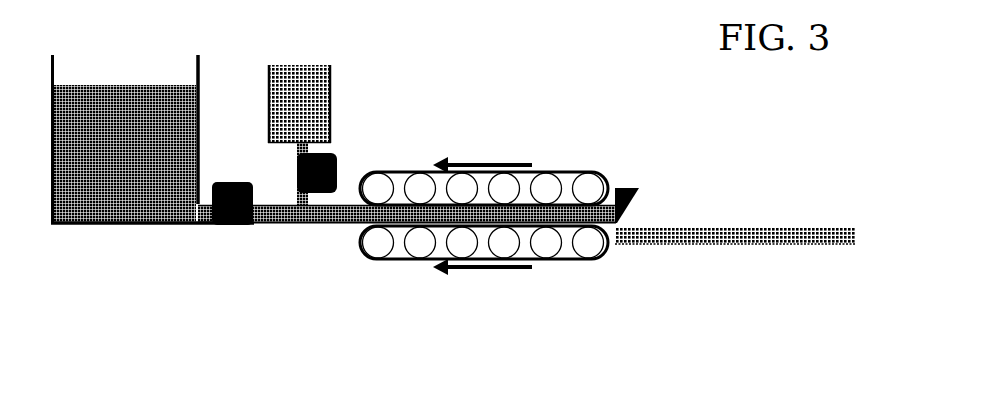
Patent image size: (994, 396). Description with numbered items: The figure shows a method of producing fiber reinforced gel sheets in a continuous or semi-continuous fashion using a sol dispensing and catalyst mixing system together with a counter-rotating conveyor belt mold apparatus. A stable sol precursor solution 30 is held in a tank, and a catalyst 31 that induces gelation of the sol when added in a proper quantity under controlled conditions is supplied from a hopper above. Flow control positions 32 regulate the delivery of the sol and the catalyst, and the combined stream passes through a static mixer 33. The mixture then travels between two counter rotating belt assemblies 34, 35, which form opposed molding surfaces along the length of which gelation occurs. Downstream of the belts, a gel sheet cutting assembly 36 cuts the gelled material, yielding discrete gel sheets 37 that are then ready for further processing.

The stable sol precursor solution 30 is at (128, 95).
The catalyst 31 is at (283, 65).
The flow control positions 32 is at (288, 179).
The static mixer 33 is at (337, 224).
The counter rotating belt assembly 34 is at (467, 182).
The counter rotating belt assembly 35 is at (543, 243).
The gel sheet cutting assembly 36 is at (627, 187).
The discrete gel sheets 37 is at (710, 235).